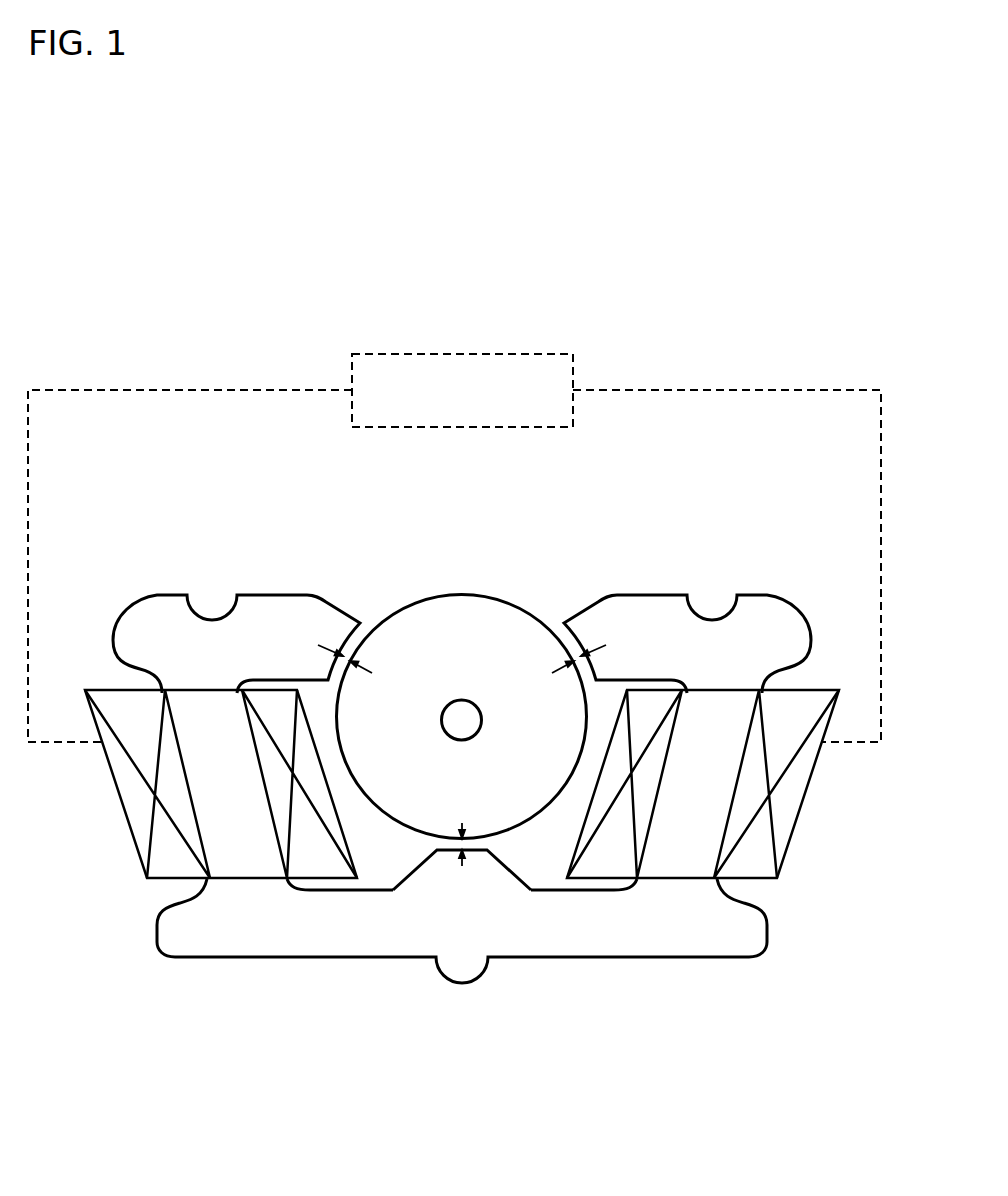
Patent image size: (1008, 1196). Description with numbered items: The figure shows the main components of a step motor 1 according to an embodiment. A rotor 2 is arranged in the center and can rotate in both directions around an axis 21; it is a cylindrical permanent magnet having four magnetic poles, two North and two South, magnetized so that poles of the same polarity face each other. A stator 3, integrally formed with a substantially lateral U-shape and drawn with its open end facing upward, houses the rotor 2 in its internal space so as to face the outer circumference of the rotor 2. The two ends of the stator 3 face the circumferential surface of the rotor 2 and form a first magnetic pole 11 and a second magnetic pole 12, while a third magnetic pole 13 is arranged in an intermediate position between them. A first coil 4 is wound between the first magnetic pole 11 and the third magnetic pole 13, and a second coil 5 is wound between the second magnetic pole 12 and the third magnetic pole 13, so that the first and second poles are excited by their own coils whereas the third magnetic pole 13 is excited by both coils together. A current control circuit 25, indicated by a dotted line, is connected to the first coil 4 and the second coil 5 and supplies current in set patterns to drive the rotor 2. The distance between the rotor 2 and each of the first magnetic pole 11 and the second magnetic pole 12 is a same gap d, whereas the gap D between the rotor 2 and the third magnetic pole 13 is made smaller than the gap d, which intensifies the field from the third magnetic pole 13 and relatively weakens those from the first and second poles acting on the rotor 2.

The step motor 1 is at (512, 550).
The rotor 2 is at (467, 612).
The stator 3 is at (743, 943).
The first coil 4 is at (121, 800).
The second coil 5 is at (802, 812).
The first magnetic pole 11 is at (342, 630).
The second magnetic pole 12 is at (583, 637).
The third magnetic pole 13 is at (478, 864).
The axis 21 is at (482, 716).
The current control circuit 25 is at (510, 354).
The gap d is at (335, 660).
The gap D is at (468, 845).